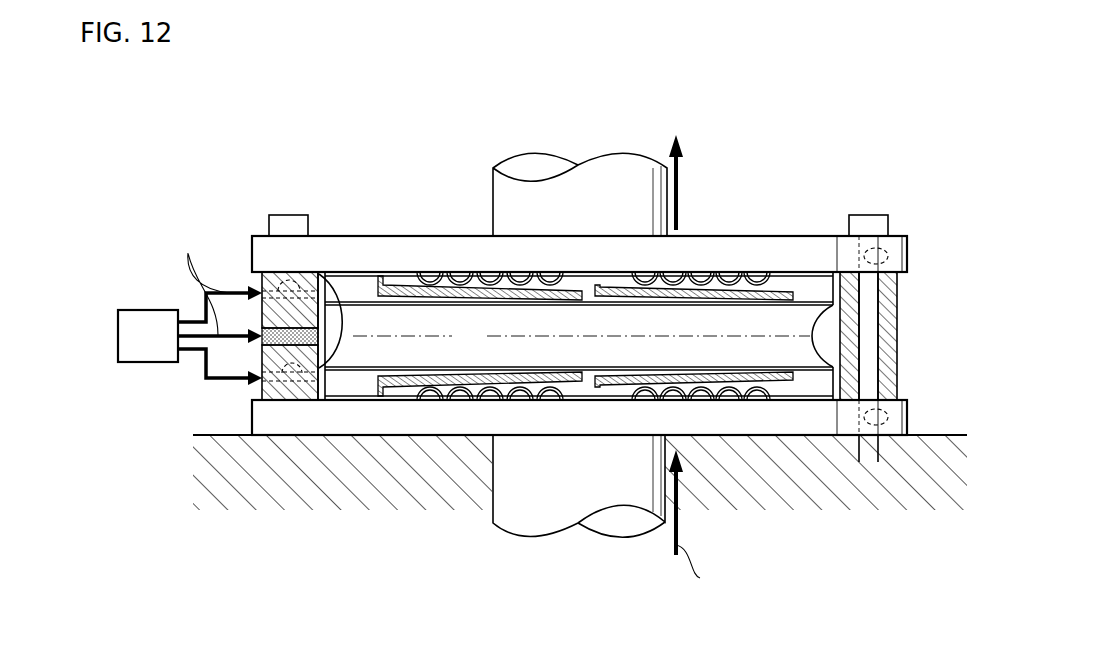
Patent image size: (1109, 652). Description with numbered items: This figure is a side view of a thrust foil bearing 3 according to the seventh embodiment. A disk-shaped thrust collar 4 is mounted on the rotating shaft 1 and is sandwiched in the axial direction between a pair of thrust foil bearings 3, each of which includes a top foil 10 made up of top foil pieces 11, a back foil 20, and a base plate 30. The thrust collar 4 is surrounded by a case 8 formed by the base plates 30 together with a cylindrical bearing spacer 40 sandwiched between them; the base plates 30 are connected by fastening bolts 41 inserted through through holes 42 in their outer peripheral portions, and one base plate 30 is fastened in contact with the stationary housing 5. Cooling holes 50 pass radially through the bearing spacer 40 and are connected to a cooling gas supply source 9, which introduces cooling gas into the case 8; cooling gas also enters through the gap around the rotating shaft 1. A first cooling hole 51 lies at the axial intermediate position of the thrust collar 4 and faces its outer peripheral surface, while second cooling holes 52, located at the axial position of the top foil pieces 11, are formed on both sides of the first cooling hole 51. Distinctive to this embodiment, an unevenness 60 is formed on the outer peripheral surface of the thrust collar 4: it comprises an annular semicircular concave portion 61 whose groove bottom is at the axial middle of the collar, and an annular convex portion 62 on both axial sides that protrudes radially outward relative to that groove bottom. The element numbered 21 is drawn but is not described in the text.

The rotating shaft 1 is at (493, 186).
The thrust foil bearing 3 is at (778, 192).
The thrust collar 4 is at (810, 333).
The housing 5 is at (913, 470).
The case 8 is at (242, 213).
The cooling gas supply source 9 is at (148, 310).
The top foil 10 is at (703, 282).
The top foil piece 11 is at (472, 285).
The back foil 20 is at (728, 277).
The second bearing ring 21 is at (438, 278).
The base plate 30 is at (807, 252).
The bearing spacer 40 is at (898, 337).
The fastening bolt 41 is at (290, 213).
The through hole 42 is at (888, 258).
The cooling hole 50 is at (280, 342).
The first cooling hole 51 is at (290, 289).
The second cooling hole 52 is at (290, 372).
The unevenness 60 is at (299, 173).
The concave portion 61 is at (303, 327).
The convex portion 62 is at (319, 337).